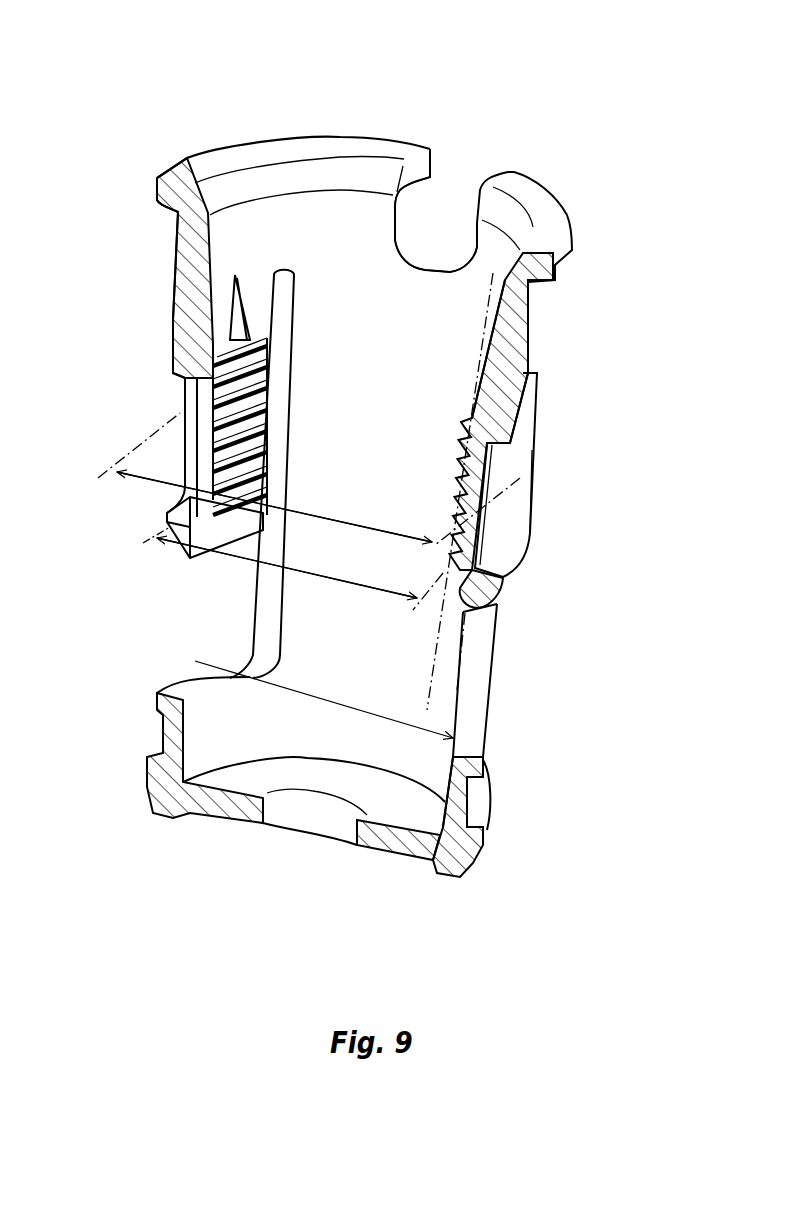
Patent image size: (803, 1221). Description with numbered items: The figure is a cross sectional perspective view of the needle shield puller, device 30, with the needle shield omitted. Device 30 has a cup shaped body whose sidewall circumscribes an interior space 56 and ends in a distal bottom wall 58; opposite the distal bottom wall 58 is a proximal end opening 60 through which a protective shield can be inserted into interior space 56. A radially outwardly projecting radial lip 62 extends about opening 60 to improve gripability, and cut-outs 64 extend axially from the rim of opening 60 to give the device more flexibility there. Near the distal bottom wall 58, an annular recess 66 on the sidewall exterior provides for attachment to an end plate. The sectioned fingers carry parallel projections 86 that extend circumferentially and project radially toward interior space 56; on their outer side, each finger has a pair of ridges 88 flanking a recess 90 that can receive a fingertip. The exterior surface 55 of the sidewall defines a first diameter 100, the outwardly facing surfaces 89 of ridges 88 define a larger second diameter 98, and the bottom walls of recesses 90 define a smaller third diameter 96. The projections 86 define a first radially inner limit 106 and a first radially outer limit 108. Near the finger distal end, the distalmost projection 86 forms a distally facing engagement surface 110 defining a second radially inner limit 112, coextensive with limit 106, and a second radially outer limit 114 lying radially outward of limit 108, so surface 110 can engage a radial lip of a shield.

The device 30 is at (240, 92).
The proximal end opening 60 is at (345, 170).
The cut-outs 64 is at (467, 188).
The radial lip 62 is at (187, 170).
The exterior surface 55 is at (250, 593).
The interior space 56 is at (410, 673).
The distal bottom wall 58 is at (395, 840).
The annular recess 66 is at (475, 797).
The projections 86 is at (262, 392).
The ridges 88 is at (535, 418).
The outwardly facing surfaces 89 is at (185, 402).
The recess 90 is at (195, 455).
The third diameter 96 is at (326, 580).
The second diameter 98 is at (325, 512).
The first diameter 100 is at (285, 690).
The first radially inner limit 106 is at (480, 345).
The first radially outer limit 108 is at (505, 330).
The distally facing engagement surface 110 is at (500, 603).
The second radially inner limit 112 is at (437, 618).
The second radially outer limit 114 is at (465, 640).